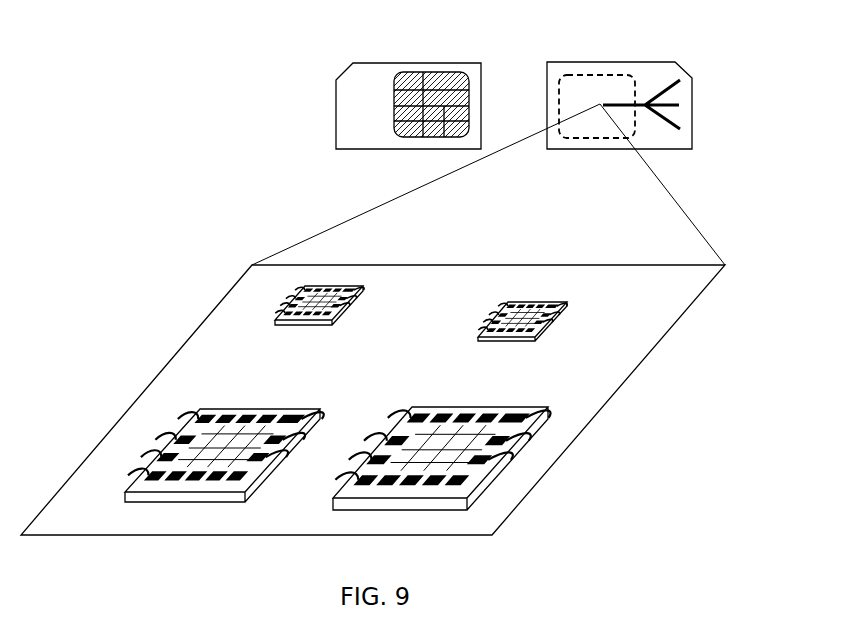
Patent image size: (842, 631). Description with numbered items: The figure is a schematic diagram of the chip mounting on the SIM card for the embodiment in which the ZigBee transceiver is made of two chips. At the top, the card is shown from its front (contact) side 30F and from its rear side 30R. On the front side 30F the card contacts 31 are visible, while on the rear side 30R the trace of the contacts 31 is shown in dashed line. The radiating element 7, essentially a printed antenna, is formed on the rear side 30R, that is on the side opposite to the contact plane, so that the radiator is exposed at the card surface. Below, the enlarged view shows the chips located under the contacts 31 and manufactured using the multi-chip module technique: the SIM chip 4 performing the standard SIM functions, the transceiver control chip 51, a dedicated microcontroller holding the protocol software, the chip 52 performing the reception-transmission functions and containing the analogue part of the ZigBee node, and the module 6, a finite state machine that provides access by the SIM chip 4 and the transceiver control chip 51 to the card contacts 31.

The front (contact) side of the card 30F is at (336, 88).
The rear side of the card 30R is at (692, 78).
The card contacts 31 is at (427, 73).
The radiating element 7 is at (657, 108).
The SIM chip 4 is at (272, 410).
The chip 52 is at (473, 406).
The module 6 is at (335, 315).
The chip 51 is at (540, 328).